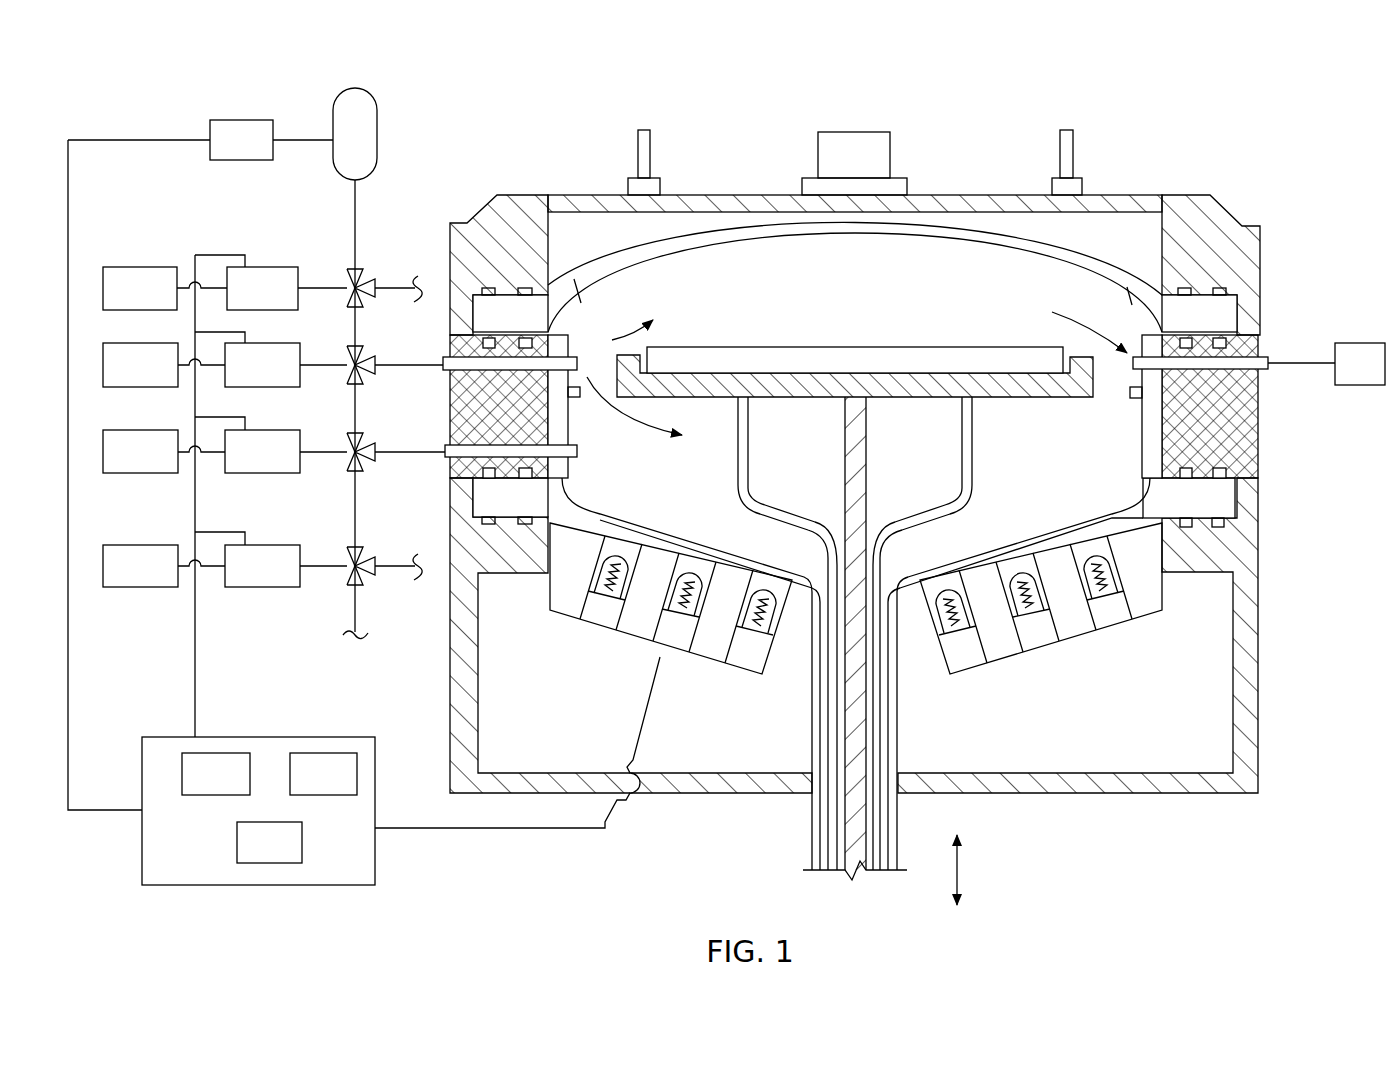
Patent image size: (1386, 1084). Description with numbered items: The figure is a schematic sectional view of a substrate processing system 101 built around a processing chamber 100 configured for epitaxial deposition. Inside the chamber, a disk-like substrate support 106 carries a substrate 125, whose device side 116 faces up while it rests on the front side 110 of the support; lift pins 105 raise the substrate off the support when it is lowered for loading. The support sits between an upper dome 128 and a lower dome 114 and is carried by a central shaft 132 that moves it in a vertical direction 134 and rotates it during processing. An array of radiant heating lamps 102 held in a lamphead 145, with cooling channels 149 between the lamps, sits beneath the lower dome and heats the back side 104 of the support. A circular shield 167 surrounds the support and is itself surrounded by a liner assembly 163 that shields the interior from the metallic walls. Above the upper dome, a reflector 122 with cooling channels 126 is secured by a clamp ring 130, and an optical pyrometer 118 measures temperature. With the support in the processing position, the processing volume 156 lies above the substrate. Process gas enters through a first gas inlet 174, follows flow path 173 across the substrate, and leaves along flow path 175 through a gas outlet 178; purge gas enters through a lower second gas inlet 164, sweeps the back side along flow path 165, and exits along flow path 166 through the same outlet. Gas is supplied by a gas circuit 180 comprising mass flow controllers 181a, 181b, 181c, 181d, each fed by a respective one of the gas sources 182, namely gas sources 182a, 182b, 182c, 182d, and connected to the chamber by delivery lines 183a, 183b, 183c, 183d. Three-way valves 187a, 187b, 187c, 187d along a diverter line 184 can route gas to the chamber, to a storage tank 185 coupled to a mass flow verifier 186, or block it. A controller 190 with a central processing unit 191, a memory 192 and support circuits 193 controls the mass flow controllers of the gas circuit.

The processing chamber 100 is at (1277, 140).
The substrate processing system 101 is at (162, 72).
The radiant heating lamps 102 is at (597, 615).
The back side of substrate support 104 is at (797, 400).
The lift pins 105 is at (987, 398).
The substrate support 106 is at (923, 398).
The front side of substrate support 110 is at (786, 370).
The lower dome 114 is at (697, 537).
The device side of substrate 116 is at (925, 345).
The optical pyrometer 118 is at (818, 152).
The reflector 122 is at (968, 193).
The substrate 125 is at (737, 357).
The channels 126 is at (650, 150).
The upper dome 128 is at (1058, 248).
The clamp ring 130 is at (522, 200).
The central shaft 132 is at (867, 488).
The vertical direction 134 is at (957, 870).
The lamphead 145 is at (758, 710).
The channels 149 is at (717, 620).
The processing volume 156 is at (850, 273).
The liner assembly 163 is at (1150, 470).
The second gas inlet 164 is at (443, 463).
The flow path 165 is at (650, 437).
The flow path 166 is at (1050, 433).
The circular shield 167 is at (573, 400).
The flow path 173 is at (625, 313).
The first gas inlet 174 is at (445, 368).
The flow path 175 is at (1067, 310).
The gas outlet 178 is at (1265, 357).
The gas circuit 180 is at (127, 655).
The mass flow controller 181a is at (271, 359).
The mass flow controller 181b is at (271, 445).
The mass flow controller 181c is at (271, 559).
The mass flow controller 181d is at (271, 282).
The gas sources 182 is at (468, 522).
The gas source 182a is at (164, 365).
The gas source 182b is at (164, 451).
The gas source 182c is at (164, 566).
The gas source 182d is at (165, 288).
The delivery line 183a is at (405, 360).
The delivery line 183b is at (407, 452).
The delivery line 183c is at (413, 568).
The delivery line 183d is at (393, 283).
The diverter line 184 is at (352, 202).
The storage tank 185 is at (345, 92).
The mass flow verifier 186 is at (200, 140).
The valve 187a is at (348, 378).
The valve 187b is at (348, 466).
The valve 187c is at (350, 583).
The valve 187d is at (352, 283).
The controller 190 is at (364, 512).
The central processing unit 191 is at (216, 774).
The memory 192 is at (323, 774).
The support circuits 193 is at (269, 842).